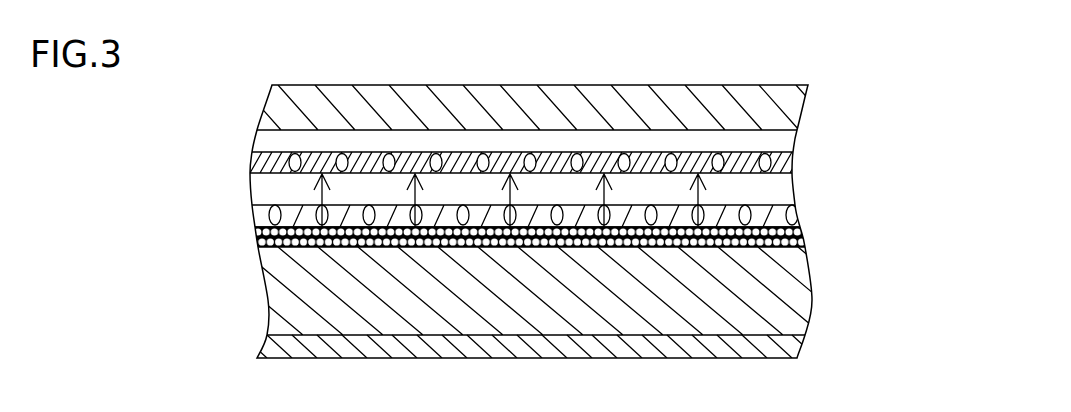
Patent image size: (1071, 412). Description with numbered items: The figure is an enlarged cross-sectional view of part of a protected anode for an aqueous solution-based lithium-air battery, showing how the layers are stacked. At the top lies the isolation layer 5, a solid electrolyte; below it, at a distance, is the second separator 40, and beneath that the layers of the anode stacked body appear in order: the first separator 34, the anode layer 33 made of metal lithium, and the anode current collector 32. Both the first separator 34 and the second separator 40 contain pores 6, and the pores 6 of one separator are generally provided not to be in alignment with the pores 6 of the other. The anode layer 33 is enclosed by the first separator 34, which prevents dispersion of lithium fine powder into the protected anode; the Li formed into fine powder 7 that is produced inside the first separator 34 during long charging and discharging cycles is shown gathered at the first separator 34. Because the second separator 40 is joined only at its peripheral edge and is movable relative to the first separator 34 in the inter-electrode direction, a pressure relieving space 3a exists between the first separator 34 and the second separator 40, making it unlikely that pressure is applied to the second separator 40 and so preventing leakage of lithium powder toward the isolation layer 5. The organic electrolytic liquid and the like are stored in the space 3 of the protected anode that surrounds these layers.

The space 3 is at (265, 141).
The pressure relieving space 3a is at (270, 188).
The isolation layer 5 is at (785, 103).
The pores 6 is at (677, 163).
The Li formed into fine powder 7 is at (790, 240).
The anode current collector 32 is at (793, 345).
The anode layer 33 is at (797, 280).
The first separator 34 is at (788, 216).
The second separator 40 is at (783, 163).